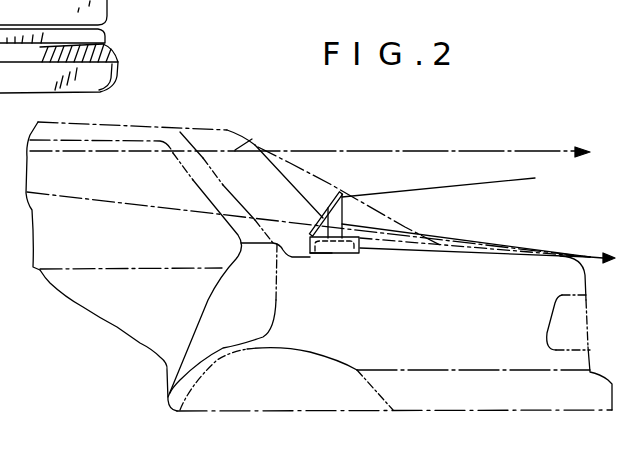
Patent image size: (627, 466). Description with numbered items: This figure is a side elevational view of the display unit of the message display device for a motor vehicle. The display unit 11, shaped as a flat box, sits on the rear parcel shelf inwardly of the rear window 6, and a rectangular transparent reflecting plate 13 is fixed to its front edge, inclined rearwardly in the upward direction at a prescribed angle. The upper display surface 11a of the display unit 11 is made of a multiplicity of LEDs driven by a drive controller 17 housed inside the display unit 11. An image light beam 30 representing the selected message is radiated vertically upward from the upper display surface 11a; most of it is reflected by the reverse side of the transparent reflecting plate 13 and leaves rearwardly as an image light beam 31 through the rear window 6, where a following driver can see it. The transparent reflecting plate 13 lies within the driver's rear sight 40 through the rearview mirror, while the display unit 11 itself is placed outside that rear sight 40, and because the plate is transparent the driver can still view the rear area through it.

The rear window 6 is at (293, 163).
The display unit 11 is at (313, 254).
The upper display surface 11a is at (307, 254).
The transparent reflecting plate 13 is at (328, 190).
The drive controller 17 is at (344, 253).
The image light beam 30 is at (345, 218).
The image light beam 31 is at (488, 182).
The rear sight 40 is at (558, 151).